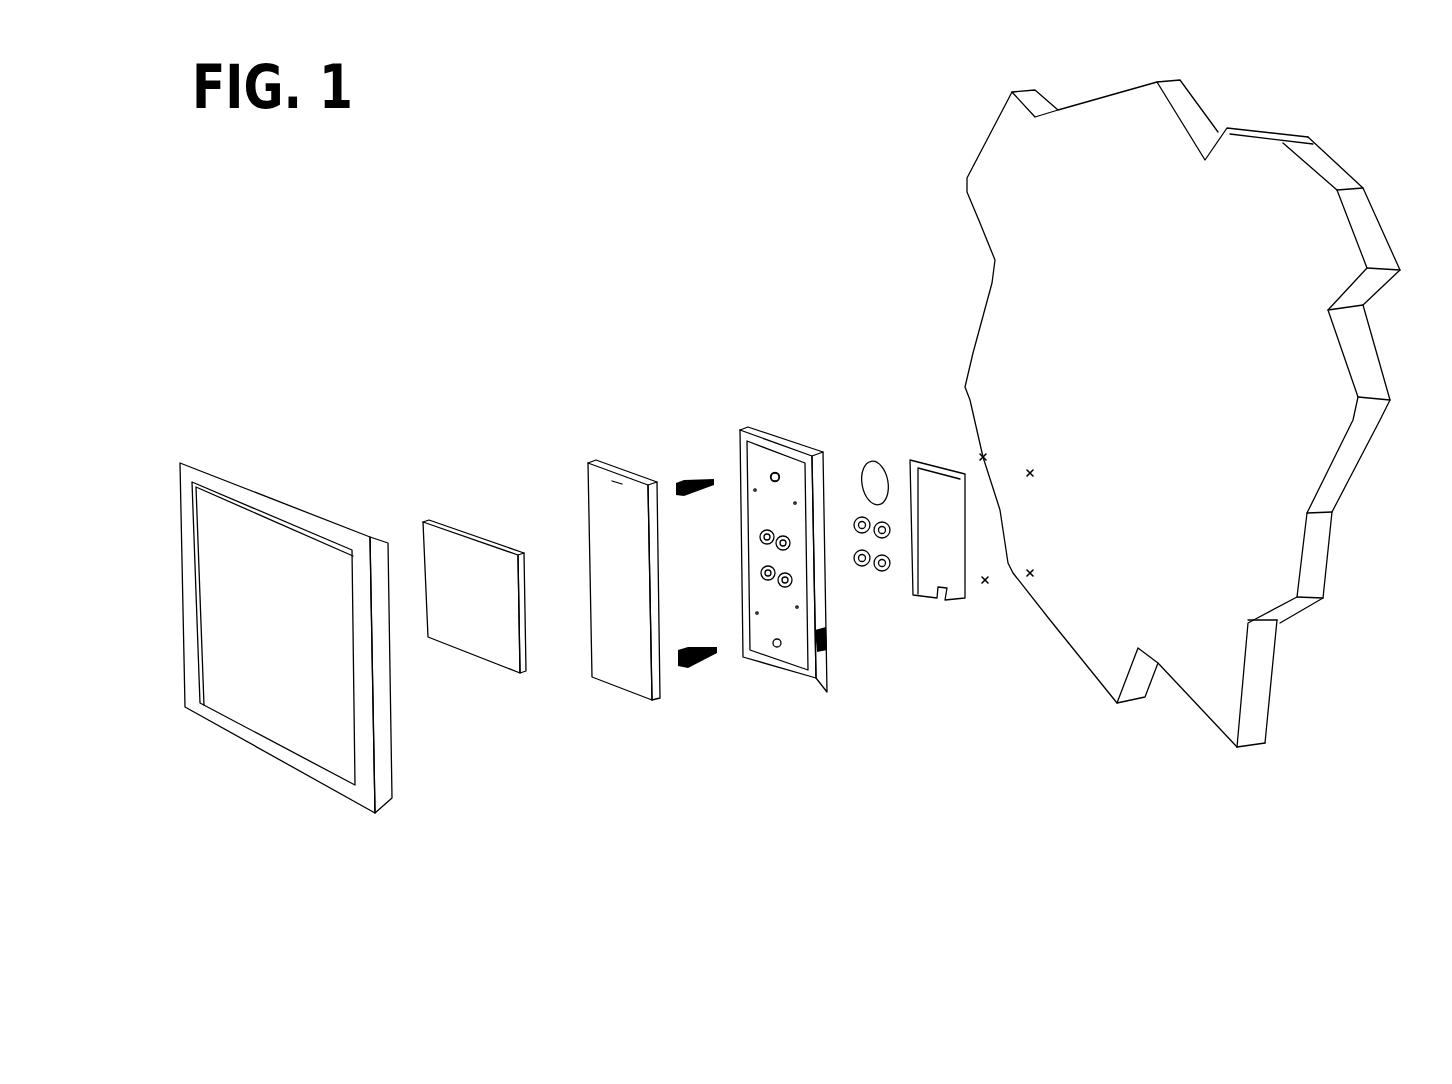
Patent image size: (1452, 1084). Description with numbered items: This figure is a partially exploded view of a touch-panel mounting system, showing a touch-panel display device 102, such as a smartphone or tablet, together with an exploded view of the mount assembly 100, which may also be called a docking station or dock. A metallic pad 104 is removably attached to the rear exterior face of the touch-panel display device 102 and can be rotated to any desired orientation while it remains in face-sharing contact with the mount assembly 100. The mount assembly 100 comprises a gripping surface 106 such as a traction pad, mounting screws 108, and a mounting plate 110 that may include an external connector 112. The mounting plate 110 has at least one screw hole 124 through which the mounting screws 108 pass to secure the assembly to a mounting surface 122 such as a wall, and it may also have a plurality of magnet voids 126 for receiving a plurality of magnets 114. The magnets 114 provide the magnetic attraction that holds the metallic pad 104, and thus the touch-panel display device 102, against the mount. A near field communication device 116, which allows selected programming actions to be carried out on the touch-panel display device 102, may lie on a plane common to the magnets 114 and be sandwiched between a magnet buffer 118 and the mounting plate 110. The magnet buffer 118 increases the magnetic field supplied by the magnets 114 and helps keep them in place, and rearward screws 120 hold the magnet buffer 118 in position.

The mount assembly 100 is at (409, 246).
The touch-panel display device 102 is at (232, 520).
The metallic pad 104 is at (455, 638).
The gripping surface 106 is at (635, 675).
The mounting screws 108 is at (678, 488).
The mounting plate 110 is at (762, 645).
The external connector 112 is at (821, 640).
The magnets 114 is at (878, 573).
The near field communication device 116 is at (868, 478).
The magnet buffer 118 is at (933, 483).
The rearward screws 120 is at (1031, 574).
The mounting surface 122 is at (1257, 587).
The screw hole 124 is at (772, 473).
The magnet voids 126 is at (770, 547).